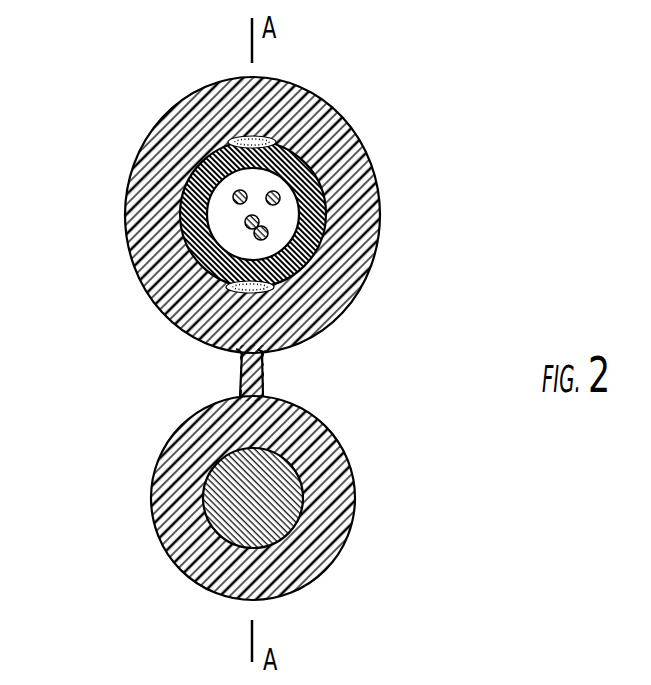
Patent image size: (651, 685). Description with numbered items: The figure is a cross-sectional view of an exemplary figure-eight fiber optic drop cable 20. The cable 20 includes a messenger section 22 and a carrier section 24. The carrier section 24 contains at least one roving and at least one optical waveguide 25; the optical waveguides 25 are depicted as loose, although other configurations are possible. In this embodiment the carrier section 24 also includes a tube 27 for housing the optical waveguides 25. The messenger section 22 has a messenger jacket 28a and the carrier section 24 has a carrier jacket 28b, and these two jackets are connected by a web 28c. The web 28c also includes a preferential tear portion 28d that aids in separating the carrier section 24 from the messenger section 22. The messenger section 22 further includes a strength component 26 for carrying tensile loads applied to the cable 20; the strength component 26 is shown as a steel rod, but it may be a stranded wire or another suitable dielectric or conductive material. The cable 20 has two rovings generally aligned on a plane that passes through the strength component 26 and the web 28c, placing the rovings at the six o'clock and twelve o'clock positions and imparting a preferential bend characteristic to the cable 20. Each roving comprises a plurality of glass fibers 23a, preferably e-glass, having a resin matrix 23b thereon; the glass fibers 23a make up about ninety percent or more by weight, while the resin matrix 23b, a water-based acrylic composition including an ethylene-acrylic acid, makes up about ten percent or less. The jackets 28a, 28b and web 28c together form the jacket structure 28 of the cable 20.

The figure-eight drop cable 20 is at (412, 586).
The messenger section 22 is at (140, 524).
The glass fibers 23a is at (274, 191).
The resin matrix 23b is at (241, 190).
The carrier section 24 is at (385, 293).
The optical waveguide 25 is at (278, 139).
The strength component 26 is at (240, 537).
The tube 27 is at (370, 158).
The web 28 is at (67, 335).
The messenger jacket 28a is at (176, 437).
The carrier jacket 28b is at (242, 351).
The web 28c is at (241, 372).
The preferential tear portion 28d is at (265, 397).